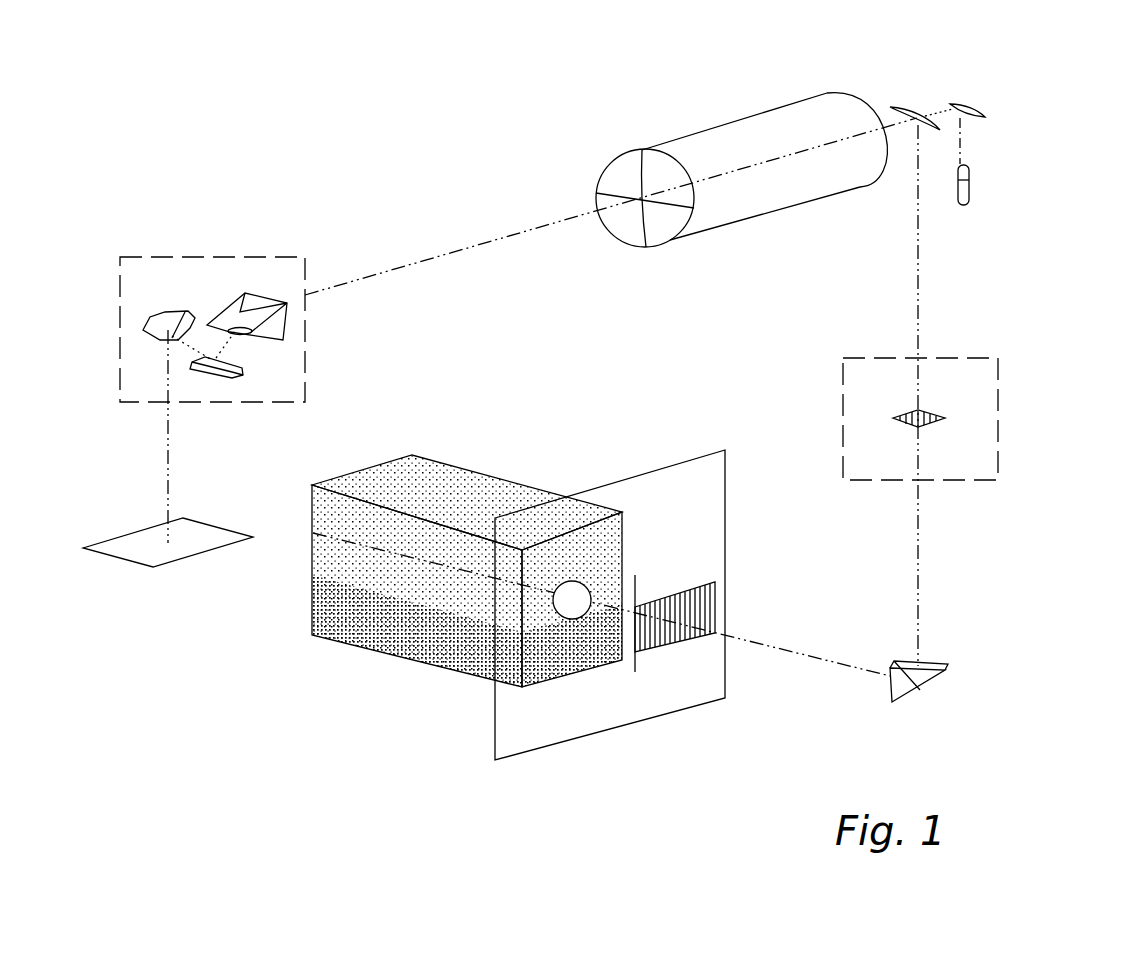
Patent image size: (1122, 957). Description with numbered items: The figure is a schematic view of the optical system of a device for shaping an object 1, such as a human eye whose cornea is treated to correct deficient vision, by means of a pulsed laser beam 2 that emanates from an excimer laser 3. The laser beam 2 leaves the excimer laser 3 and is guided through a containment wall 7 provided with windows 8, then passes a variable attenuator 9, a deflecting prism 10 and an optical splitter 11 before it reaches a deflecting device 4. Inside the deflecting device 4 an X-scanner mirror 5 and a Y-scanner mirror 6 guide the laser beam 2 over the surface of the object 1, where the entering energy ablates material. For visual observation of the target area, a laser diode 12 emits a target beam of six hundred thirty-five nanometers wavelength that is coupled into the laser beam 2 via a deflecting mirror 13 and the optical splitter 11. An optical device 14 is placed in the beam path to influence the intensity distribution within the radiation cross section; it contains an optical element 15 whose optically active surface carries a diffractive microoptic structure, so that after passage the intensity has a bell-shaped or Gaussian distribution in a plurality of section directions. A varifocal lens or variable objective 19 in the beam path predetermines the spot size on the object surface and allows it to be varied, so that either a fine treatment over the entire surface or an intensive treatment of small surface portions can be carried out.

The object 1 is at (128, 552).
The pulsed laser beam 2 is at (823, 663).
The excimer laser 3 is at (365, 635).
The deflecting device 4 is at (190, 258).
The X-scanner mirror 5 is at (230, 373).
The Y-scanner mirror 6 is at (158, 322).
The containment wall 7 is at (637, 487).
The windows 8 is at (645, 600).
The variable attenuator 9 is at (680, 617).
The deflecting prism 10 is at (920, 668).
The optical splitter 11 is at (908, 113).
The laser diode 12 is at (970, 190).
The deflecting mirror 13 is at (975, 110).
The optical device 14 is at (863, 368).
The optical element 15 is at (935, 422).
The variable objective 19 is at (710, 138).